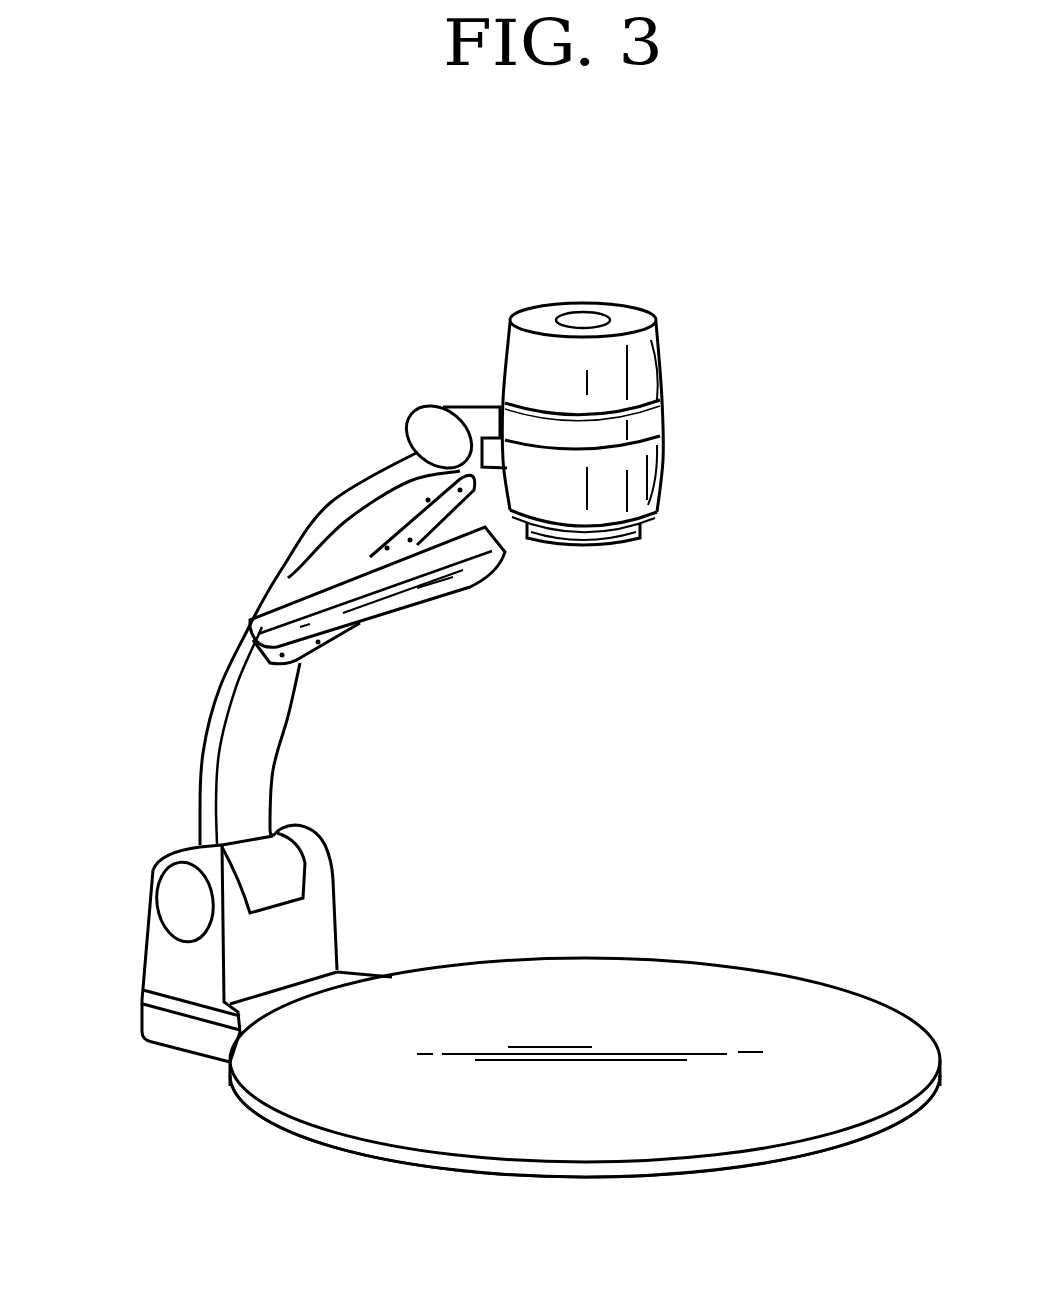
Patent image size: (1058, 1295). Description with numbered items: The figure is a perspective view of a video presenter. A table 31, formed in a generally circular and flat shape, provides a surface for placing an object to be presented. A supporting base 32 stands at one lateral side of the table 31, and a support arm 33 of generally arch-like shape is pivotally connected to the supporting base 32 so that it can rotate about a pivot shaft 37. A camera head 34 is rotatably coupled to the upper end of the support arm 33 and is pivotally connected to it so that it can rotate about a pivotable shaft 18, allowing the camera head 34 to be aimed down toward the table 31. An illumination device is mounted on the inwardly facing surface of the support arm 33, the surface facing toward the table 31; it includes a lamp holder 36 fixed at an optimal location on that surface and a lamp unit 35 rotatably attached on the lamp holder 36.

The pivotable shaft 18 is at (433, 427).
The table 31 is at (668, 970).
The supporting base 32 is at (157, 960).
The support arm 33 is at (345, 510).
The camera head 34 is at (652, 480).
The lamp unit 35 is at (457, 583).
The lamp holder 36 is at (350, 553).
The pivot shaft 37 is at (173, 890).